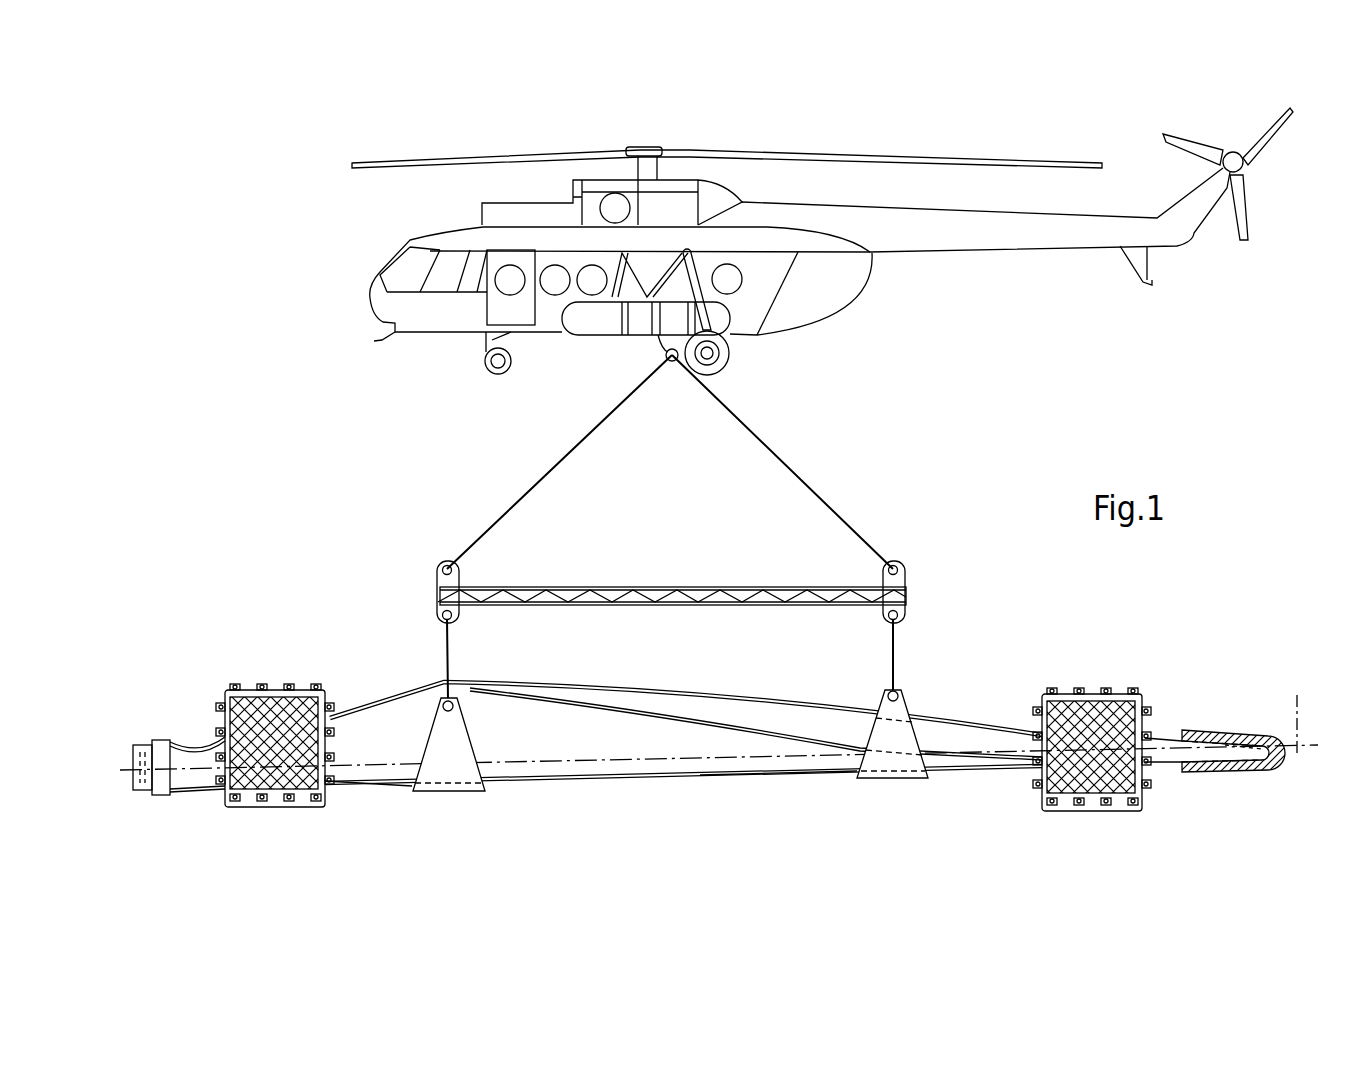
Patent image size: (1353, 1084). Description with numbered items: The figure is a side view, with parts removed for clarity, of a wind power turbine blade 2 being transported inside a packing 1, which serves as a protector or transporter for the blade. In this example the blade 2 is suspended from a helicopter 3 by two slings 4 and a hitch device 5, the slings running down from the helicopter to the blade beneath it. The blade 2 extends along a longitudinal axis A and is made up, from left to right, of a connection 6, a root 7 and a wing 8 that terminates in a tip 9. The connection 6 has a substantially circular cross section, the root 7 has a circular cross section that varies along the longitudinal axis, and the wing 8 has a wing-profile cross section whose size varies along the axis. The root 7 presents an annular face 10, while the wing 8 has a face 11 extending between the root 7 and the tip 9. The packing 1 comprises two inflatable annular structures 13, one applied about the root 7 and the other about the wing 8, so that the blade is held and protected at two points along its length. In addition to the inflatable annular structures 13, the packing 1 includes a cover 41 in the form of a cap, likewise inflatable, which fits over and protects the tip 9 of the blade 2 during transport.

The packing 1 is at (1085, 625).
The blade 2 is at (683, 809).
The helicopter 3 is at (985, 150).
The slings 4 is at (452, 792).
The hitch device 5 is at (892, 545).
The connection 6 is at (151, 812).
The root 7 is at (348, 800).
The wing 8 is at (835, 782).
The tip 9 is at (1223, 739).
The annular face 10 is at (382, 722).
The face 11 is at (795, 722).
The inflatable annular structures 13 is at (282, 822).
The cover 41 is at (1237, 738).